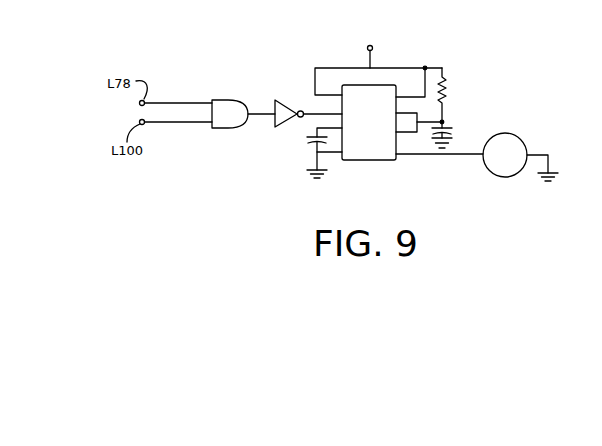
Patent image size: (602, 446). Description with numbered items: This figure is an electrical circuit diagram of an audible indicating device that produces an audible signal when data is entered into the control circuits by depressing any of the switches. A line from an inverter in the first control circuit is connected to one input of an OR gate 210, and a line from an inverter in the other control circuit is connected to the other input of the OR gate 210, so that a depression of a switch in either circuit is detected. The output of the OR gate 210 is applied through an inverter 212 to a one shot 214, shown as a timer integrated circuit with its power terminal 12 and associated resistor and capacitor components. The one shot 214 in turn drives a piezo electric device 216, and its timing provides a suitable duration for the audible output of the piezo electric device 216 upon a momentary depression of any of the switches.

The power supply terminal 12 is at (373, 45).
The OR gate 210 is at (228, 98).
The inverter 212 is at (292, 72).
The one shot 214 is at (392, 160).
The piezo electric device 216 is at (532, 125).